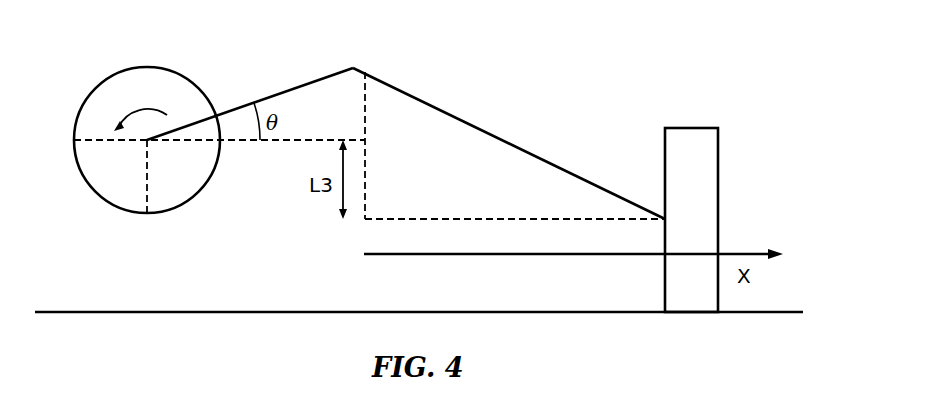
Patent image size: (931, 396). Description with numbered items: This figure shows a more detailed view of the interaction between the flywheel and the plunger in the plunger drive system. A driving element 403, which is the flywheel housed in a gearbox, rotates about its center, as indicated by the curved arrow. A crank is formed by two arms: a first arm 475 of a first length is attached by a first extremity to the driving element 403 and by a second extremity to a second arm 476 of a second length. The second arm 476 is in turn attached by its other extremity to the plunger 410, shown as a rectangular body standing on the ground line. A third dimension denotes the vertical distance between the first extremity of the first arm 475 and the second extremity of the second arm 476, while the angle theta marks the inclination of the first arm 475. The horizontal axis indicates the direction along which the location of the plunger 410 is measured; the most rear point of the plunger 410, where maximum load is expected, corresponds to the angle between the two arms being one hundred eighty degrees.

The driving element 403 is at (102, 82).
The first arm 475 is at (277, 94).
The second arm 476 is at (473, 127).
The plunger 410 is at (692, 128).